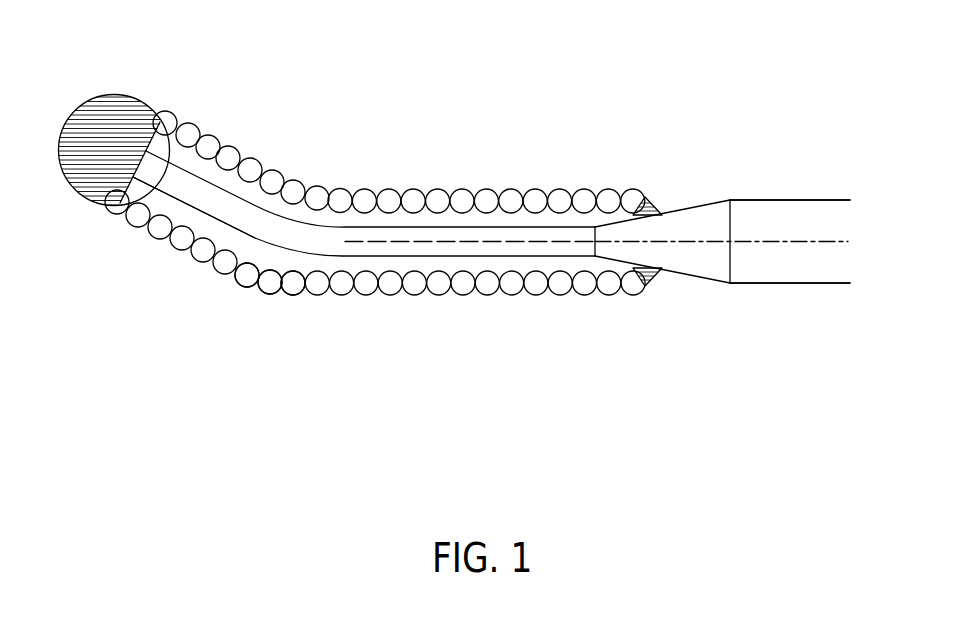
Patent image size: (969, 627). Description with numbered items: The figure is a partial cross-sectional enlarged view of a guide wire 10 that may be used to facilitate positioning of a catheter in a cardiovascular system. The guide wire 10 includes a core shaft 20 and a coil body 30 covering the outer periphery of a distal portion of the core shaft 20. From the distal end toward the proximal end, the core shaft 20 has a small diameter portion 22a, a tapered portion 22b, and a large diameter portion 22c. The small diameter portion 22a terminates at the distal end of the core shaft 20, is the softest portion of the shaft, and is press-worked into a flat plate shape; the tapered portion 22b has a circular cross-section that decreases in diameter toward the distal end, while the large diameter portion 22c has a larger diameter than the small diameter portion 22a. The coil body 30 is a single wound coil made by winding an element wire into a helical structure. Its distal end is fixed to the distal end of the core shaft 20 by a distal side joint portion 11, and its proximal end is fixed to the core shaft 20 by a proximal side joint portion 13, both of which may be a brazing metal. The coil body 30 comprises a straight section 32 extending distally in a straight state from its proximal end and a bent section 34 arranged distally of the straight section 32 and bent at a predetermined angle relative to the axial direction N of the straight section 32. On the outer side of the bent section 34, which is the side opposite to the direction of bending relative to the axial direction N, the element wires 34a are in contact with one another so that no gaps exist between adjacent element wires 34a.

The guide wire 10 is at (583, 101).
The distal side joint portion 11 is at (102, 92).
The proximal side joint portion 13 is at (677, 140).
The core shaft 20 is at (790, 352).
The small diameter portion 22a is at (112, 285).
The tapered portion 22b is at (683, 323).
The large diameter portion 22c is at (795, 142).
The coil body 30 is at (602, 370).
The straight section 32 is at (644, 178).
The bent section 34 is at (331, 180).
The element wires 34a is at (269, 342).
The axial direction N is at (733, 240).